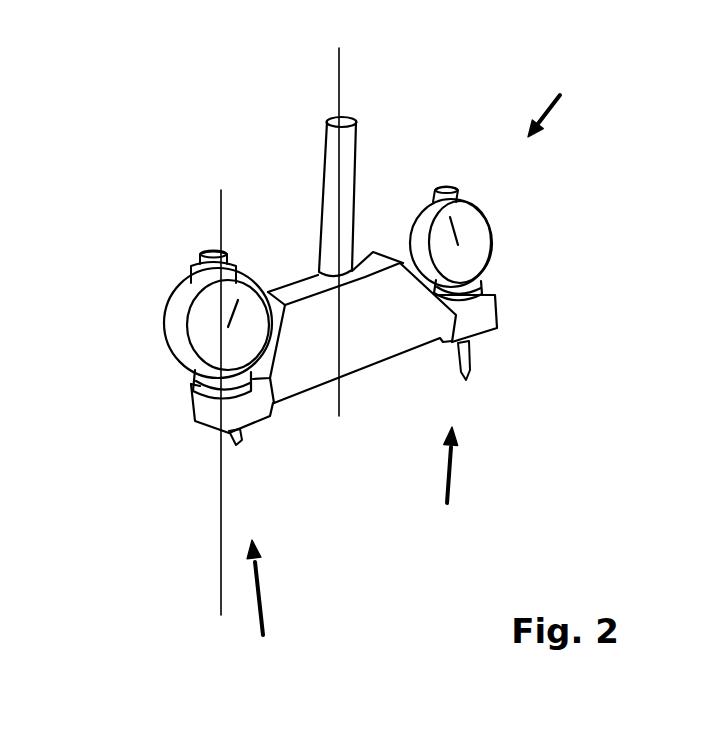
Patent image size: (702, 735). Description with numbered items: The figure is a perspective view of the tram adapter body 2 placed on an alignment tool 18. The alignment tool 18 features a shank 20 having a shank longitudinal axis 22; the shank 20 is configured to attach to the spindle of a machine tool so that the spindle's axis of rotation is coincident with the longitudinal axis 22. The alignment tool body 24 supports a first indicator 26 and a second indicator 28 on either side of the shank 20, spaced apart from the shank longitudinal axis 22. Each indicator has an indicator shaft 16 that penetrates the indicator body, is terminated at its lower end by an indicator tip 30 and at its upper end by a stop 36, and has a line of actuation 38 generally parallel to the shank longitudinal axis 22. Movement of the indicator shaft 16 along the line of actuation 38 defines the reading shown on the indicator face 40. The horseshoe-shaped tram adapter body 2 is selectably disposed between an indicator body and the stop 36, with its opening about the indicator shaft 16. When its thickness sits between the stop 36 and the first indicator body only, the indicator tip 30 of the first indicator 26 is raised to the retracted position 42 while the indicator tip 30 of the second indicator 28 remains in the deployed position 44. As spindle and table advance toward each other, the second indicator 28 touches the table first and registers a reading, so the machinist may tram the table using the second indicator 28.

The tram adapter body 2 is at (190, 273).
The indicator shaft 16 is at (470, 360).
The alignment tool 18 is at (559, 103).
The shank 20 is at (357, 148).
The shank longitudinal axis 22 is at (330, 95).
The alignment tool body 24 is at (385, 343).
The first indicator 26 is at (167, 337).
The second indicator 28 is at (483, 212).
The indicator tip 30 is at (470, 387).
The stop 36 is at (200, 257).
The line of actuation 38 is at (217, 516).
The indicator face 40 is at (205, 343).
The retracted position 42 is at (265, 606).
The deployed position 44 is at (440, 481).